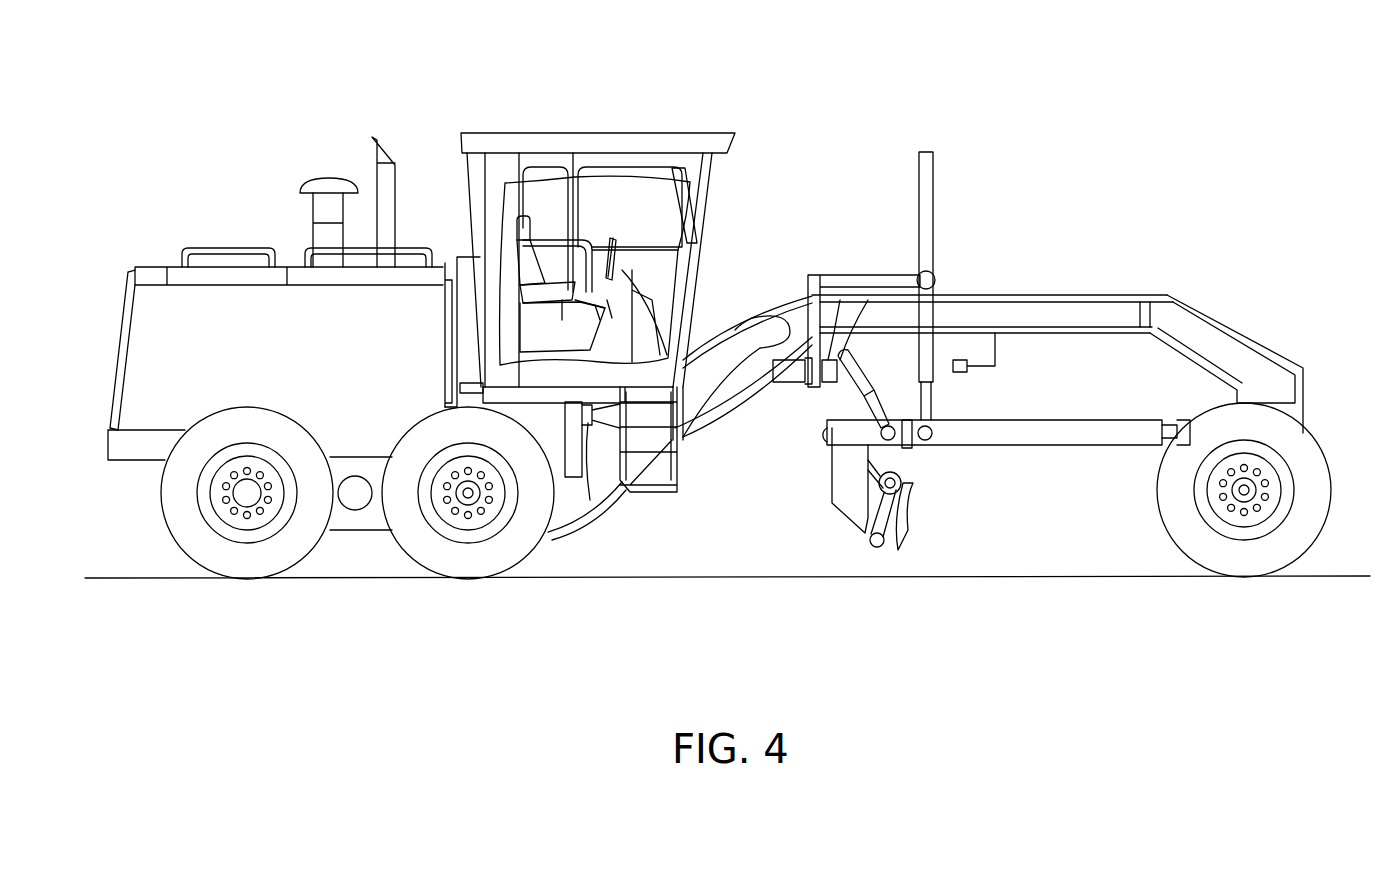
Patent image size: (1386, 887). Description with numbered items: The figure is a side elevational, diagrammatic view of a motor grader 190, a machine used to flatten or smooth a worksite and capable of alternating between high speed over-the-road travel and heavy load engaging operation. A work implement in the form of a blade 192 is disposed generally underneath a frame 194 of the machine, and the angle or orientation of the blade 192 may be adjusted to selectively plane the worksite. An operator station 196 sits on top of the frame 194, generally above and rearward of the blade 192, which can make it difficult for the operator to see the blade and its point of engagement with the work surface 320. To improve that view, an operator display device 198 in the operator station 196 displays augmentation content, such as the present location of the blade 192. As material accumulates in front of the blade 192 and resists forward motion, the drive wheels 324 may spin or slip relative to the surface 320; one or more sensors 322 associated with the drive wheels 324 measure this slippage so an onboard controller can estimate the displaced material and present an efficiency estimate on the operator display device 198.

The motor grader 190 is at (765, 131).
The blade 192 is at (910, 513).
The frame 194 is at (758, 307).
The operator station 196 is at (578, 140).
The operator display device 198 is at (690, 208).
The work surface 320 is at (1018, 573).
The sensor 322 is at (352, 497).
The drive wheels 324 is at (465, 557).